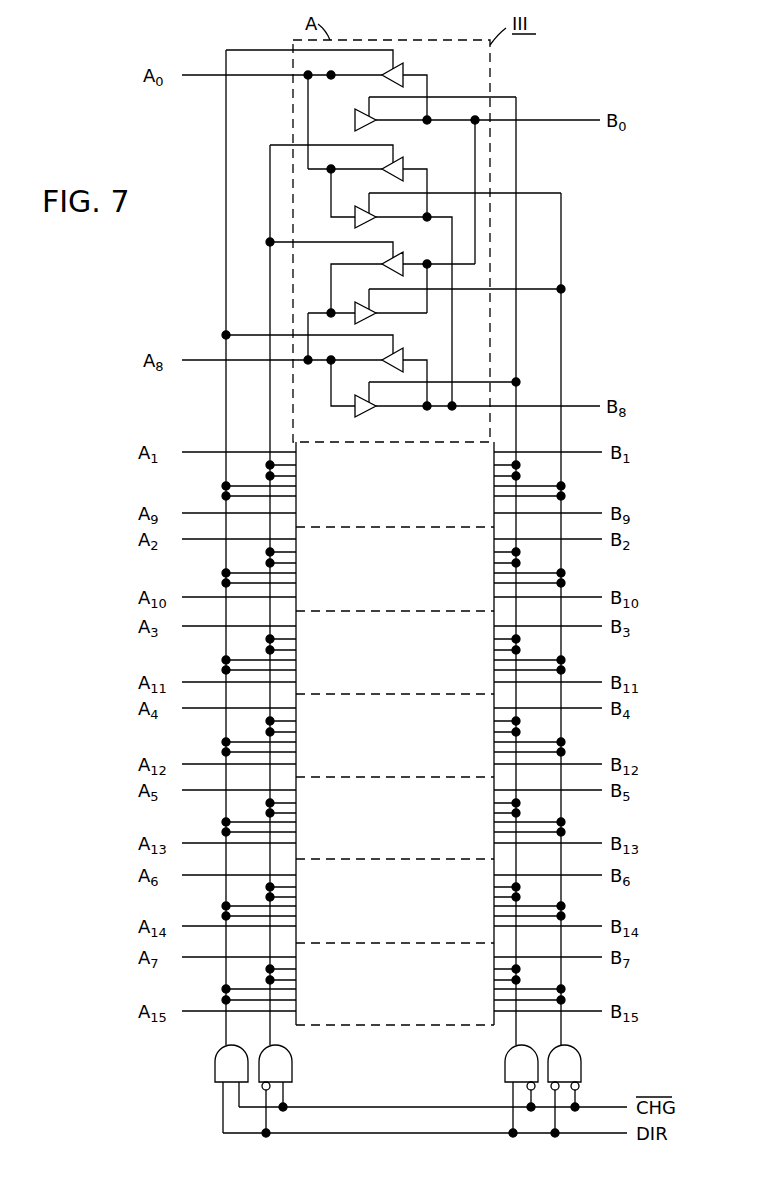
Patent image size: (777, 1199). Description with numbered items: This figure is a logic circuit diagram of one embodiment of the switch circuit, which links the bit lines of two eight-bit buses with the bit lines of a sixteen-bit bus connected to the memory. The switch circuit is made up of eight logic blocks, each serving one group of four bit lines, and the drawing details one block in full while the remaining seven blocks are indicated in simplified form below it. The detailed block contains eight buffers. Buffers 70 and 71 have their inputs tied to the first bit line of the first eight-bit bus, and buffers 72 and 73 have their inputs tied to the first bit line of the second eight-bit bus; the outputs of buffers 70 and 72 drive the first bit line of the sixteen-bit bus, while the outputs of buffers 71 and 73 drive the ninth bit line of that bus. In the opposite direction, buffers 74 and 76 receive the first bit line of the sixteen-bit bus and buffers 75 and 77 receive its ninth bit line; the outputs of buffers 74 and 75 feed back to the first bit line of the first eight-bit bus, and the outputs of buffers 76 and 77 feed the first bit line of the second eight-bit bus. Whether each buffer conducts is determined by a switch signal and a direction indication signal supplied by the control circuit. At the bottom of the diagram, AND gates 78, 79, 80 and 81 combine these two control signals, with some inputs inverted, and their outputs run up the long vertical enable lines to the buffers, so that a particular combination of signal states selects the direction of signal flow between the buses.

The buffer 70 is at (355, 123).
The buffer 71 is at (354, 221).
The buffer 72 is at (355, 308).
The buffer 73 is at (356, 410).
The buffer 74 is at (400, 69).
The buffer 75 is at (400, 163).
The buffer 76 is at (400, 258).
The buffer 77 is at (400, 354).
The AND gate 78 is at (214, 1070).
The AND gate 79 is at (293, 1072).
The AND gate 80 is at (505, 1071).
The AND gate 81 is at (582, 1072).